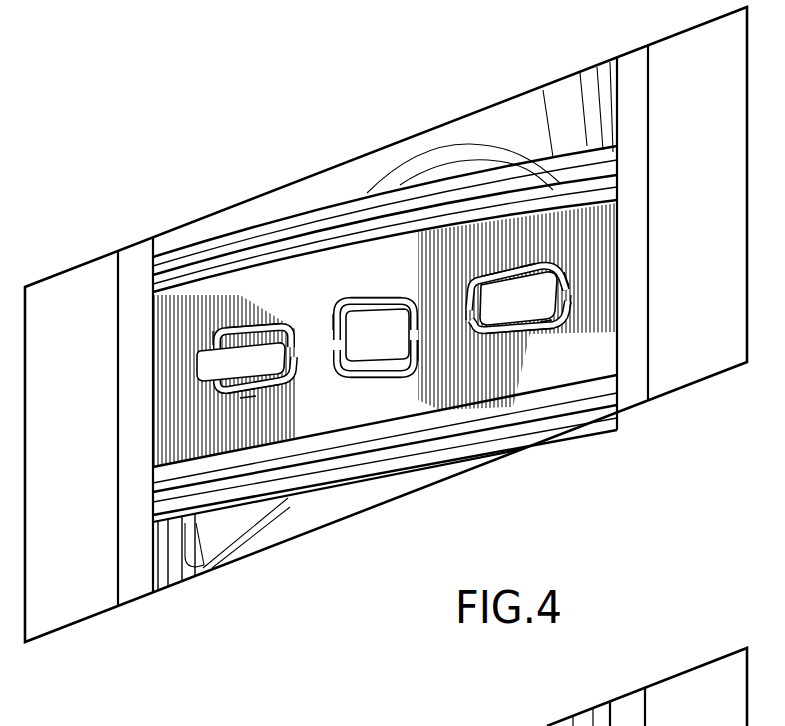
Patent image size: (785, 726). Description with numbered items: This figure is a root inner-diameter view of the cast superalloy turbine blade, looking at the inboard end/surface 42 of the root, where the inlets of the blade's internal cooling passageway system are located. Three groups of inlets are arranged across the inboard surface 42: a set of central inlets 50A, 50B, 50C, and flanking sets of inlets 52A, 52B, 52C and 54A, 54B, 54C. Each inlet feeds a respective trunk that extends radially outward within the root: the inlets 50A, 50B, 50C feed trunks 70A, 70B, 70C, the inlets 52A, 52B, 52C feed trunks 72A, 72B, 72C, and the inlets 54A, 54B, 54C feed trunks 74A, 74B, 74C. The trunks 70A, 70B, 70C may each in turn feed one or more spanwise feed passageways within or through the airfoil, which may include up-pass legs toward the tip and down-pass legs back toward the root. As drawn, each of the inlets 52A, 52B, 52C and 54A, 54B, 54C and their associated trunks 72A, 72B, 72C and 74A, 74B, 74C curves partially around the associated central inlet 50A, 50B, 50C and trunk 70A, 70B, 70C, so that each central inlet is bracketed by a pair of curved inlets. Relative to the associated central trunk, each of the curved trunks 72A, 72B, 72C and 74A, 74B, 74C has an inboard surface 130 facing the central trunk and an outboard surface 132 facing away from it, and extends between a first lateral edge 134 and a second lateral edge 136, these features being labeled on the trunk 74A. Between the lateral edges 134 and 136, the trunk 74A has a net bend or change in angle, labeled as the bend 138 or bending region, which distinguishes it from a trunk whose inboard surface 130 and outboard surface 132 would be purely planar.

The inboard end/surface 42 is at (277, 543).
The inlet 50A is at (522, 307).
The inlet 50B is at (371, 388).
The inlet 50C is at (200, 368).
The inlet 52A is at (569, 334).
The inlet 52B is at (320, 397).
The inlet 52C is at (280, 390).
The inlet 54A is at (503, 278).
The inlet 54B is at (371, 288).
The inlet 54C is at (247, 322).
The trunk 70A is at (540, 303).
The trunk 70B is at (382, 343).
The trunk 70C is at (230, 373).
The trunk 72A is at (545, 330).
The trunk 72B is at (408, 352).
The trunk 72C is at (248, 394).
The trunk 74A is at (521, 262).
The trunk 74B is at (355, 300).
The trunk 74C is at (220, 333).
The inboard surface 130 is at (490, 278).
The outboard surface 132 is at (565, 278).
The lateral edge 134 is at (572, 290).
The lateral edge 136 is at (470, 307).
The bend 138 is at (462, 277).